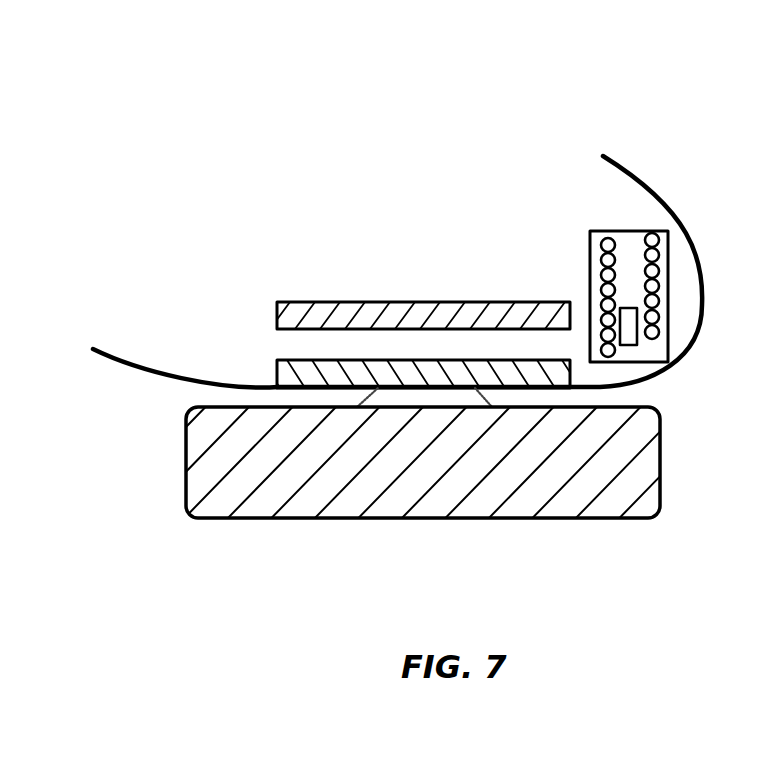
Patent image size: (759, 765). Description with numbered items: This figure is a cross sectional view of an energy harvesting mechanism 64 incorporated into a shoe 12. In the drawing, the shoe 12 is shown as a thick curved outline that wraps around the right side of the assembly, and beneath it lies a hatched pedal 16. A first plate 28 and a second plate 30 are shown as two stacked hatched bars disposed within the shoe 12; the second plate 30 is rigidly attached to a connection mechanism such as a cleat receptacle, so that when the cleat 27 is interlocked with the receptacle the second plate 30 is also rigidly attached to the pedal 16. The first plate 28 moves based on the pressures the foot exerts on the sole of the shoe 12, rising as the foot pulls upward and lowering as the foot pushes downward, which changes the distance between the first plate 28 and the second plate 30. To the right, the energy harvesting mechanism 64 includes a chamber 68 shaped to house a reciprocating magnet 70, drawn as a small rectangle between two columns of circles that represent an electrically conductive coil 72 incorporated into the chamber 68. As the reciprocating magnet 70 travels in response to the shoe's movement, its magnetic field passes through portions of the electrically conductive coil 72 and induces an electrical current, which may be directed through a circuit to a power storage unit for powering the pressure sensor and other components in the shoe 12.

The shoe 12 is at (645, 138).
The pedal 16 is at (597, 505).
The cleat 27 is at (433, 397).
The first plate 28 is at (348, 302).
The second plate 30 is at (278, 368).
The energy harvesting mechanism 64 is at (554, 244).
The chamber 68 is at (602, 230).
The reciprocating magnet 70 is at (632, 345).
The electrically conductive coil 72 is at (657, 266).